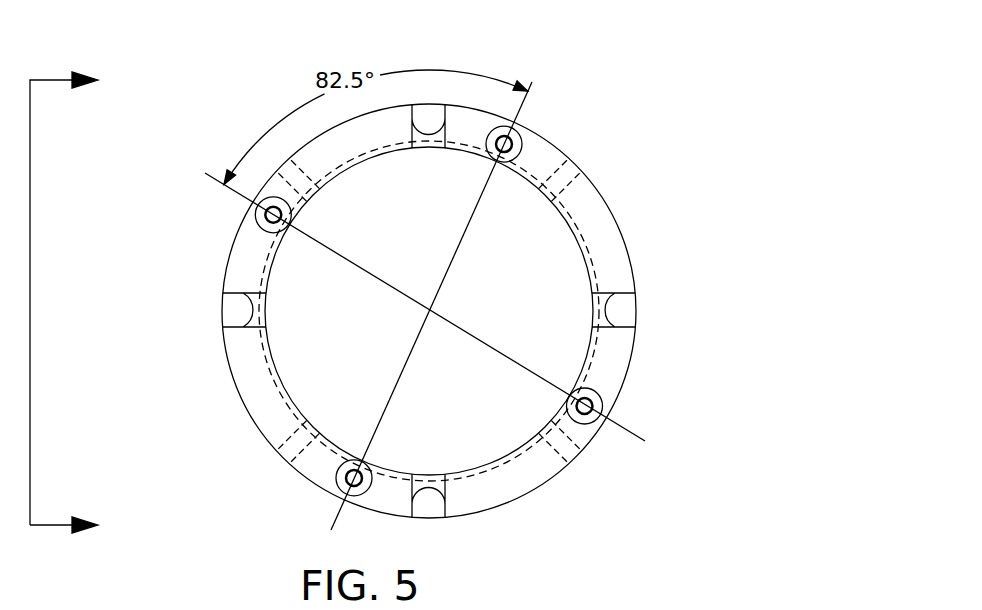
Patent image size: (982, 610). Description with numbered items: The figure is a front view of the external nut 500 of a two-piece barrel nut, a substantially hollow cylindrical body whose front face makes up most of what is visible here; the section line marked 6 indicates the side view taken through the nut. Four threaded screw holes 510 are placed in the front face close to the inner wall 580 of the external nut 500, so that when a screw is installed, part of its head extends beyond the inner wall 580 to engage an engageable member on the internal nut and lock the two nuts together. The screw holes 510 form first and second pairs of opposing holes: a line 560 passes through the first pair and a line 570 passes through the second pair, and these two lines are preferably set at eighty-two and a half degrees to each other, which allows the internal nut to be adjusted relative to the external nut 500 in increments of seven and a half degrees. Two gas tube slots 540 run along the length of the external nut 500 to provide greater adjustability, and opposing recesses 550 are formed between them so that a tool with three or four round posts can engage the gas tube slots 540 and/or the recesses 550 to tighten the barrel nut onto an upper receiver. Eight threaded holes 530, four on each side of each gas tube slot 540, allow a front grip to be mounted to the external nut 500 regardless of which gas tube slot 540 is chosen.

The external nut 500 is at (800, 72).
The threaded screw holes 510 is at (291, 214).
The threaded holes 530 is at (292, 170).
The gas tube slots 540 is at (237, 310).
The opposing recesses 550 is at (429, 116).
The line 560 is at (625, 430).
The line 570 is at (520, 103).
The inner wall 580 is at (581, 240).
The section view indicator 6 is at (81, 302).